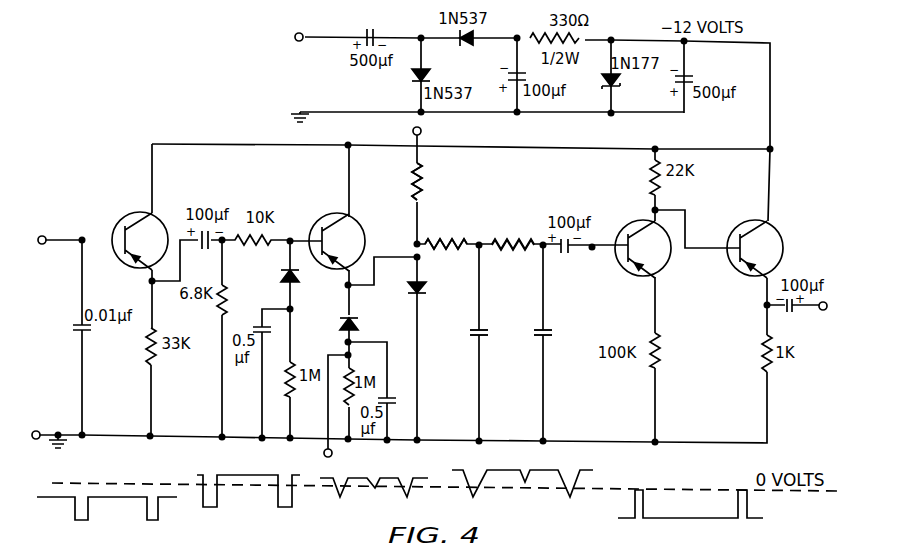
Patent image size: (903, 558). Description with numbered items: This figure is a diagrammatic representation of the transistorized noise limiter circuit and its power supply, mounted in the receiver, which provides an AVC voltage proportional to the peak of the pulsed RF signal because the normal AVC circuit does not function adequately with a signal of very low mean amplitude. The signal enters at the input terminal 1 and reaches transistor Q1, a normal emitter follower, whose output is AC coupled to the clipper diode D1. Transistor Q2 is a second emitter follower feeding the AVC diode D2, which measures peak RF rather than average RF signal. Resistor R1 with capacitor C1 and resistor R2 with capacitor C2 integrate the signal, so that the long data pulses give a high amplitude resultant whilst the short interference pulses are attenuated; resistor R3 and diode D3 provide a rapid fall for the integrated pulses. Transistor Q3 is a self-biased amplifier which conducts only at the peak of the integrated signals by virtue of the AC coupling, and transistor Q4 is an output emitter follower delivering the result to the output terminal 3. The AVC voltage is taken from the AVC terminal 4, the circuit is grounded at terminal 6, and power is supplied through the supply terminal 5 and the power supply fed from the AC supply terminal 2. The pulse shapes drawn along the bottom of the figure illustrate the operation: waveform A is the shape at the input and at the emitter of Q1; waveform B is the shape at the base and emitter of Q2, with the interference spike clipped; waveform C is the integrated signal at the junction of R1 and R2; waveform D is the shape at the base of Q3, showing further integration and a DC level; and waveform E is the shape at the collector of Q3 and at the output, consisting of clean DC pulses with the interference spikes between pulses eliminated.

The input terminal 1 is at (52, 238).
The 6.3V AC supply terminal 2 is at (289, 36).
The output terminal 3 is at (828, 315).
The AVC terminal 4 is at (333, 454).
The +150V supply terminal 5 is at (403, 131).
The ground terminal 6 is at (30, 420).
The emitter follower Q1 is at (132, 228).
The second emitter follower Q2 is at (332, 230).
The self-biased amplifier Q3 is at (618, 231).
The output emitter follower Q4 is at (749, 238).
The clipper diode D1 is at (269, 276).
The AVC diode D2 is at (332, 317).
The diode D3 is at (402, 287).
The resistor R1 is at (446, 246).
The resistor R2 is at (512, 246).
The resistor R3 is at (438, 182).
The capacitor C1 is at (471, 338).
The capacitor C2 is at (533, 340).
The pulse shape at input and emitter of Q1 A is at (118, 497).
The pulse shape at base and emitter of Q2 B is at (242, 475).
The pulse shape at junction of R1 and R2 C is at (374, 497).
The pulse shape at base of Q3 D is at (522, 493).
The pulse shape at collector of Q3 and output E is at (690, 518).